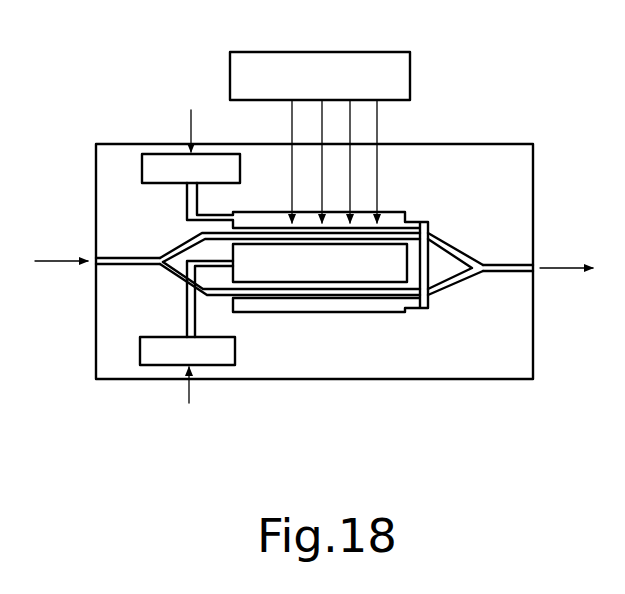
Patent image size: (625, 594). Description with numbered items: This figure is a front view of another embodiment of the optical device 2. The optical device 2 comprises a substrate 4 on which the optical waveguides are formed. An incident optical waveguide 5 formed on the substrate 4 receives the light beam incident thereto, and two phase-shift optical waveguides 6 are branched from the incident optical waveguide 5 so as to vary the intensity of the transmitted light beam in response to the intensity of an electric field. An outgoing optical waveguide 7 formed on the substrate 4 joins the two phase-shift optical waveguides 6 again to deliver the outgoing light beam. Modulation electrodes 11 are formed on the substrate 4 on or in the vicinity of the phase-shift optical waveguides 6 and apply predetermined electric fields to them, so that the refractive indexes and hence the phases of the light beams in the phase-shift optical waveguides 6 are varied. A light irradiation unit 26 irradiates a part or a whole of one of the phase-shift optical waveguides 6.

The optical device 2 is at (540, 130).
The substrate 4 is at (465, 380).
The incident optical waveguide 5 is at (132, 267).
The phase-shift optical waveguides 6 is at (458, 246).
The outgoing optical waveguide 7 is at (515, 276).
The modulation electrodes 11 is at (403, 209).
The light irradiation unit 26 is at (372, 58).